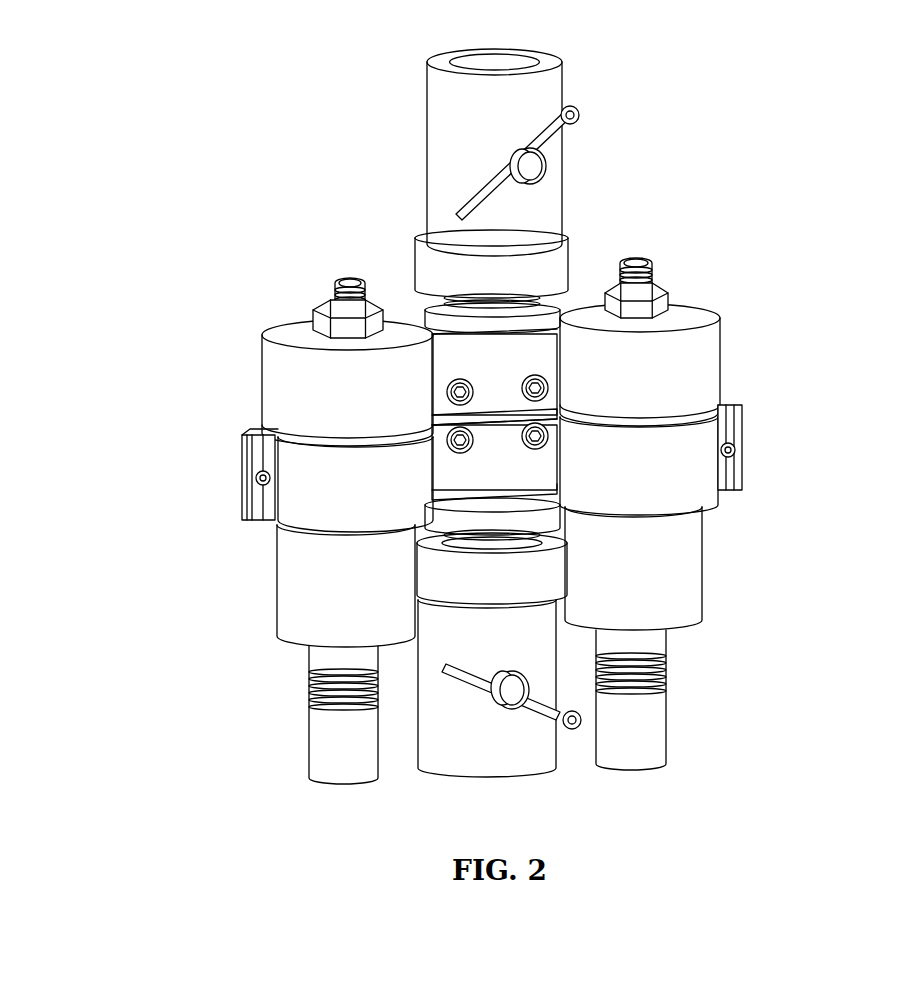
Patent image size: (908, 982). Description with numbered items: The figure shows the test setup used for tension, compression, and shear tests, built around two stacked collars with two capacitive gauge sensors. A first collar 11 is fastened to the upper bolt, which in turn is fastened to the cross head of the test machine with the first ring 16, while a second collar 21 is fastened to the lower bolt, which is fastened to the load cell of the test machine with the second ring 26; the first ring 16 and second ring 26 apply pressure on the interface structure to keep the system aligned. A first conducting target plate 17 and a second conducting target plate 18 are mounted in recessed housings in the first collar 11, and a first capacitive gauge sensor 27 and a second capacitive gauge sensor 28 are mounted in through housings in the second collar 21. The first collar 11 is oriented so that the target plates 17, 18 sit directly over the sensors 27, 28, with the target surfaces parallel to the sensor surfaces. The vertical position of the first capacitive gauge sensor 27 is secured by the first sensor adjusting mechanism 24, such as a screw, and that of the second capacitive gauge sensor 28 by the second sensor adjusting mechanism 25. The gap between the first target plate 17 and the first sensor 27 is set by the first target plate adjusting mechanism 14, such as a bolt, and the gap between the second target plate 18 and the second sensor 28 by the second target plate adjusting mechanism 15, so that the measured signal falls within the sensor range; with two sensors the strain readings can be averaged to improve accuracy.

The first collar 11 is at (702, 301).
The first target plate adjusting mechanism 14 is at (307, 306).
The second target plate adjusting mechanism 15 is at (642, 262).
The first ring 16 is at (424, 275).
The first conducting target plate 17 is at (292, 430).
The second conducting target plate 18 is at (636, 417).
The second collar 21 is at (716, 507).
The first sensor adjusting mechanism 24 is at (255, 494).
The second sensor adjusting mechanism 25 is at (735, 458).
The second ring 26 is at (566, 566).
The first capacitive gauge sensor 27 is at (278, 600).
The second capacitive gauge sensor 28 is at (706, 552).